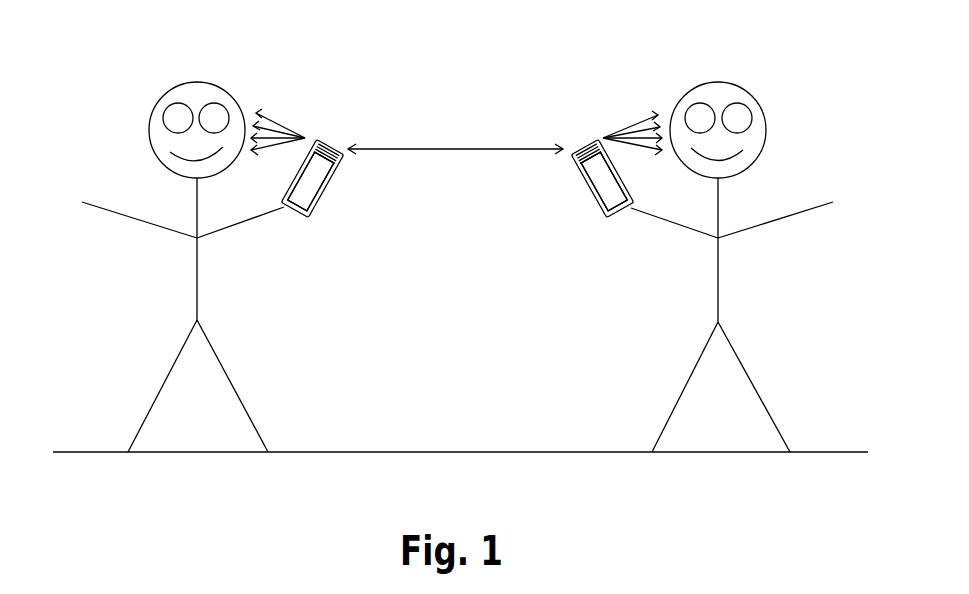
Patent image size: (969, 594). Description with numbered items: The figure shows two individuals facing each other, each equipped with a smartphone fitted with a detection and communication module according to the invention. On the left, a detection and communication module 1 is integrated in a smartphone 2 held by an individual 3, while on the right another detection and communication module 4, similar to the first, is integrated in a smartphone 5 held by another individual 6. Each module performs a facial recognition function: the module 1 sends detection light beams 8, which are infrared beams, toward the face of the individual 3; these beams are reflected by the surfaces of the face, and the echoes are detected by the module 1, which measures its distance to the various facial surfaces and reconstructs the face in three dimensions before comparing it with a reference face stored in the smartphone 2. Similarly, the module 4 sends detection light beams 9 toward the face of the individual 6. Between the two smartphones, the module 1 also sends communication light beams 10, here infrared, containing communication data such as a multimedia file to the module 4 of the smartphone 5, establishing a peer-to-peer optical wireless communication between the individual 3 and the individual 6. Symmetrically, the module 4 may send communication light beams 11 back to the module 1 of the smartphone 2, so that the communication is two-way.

The detection and communication module 1 is at (336, 142).
The smartphone 2 is at (322, 190).
The individual 3 is at (197, 290).
The detection and communication module 4 is at (593, 142).
The smartphone 5 is at (592, 190).
The individual 6 is at (718, 280).
The detection light beams 8 is at (275, 120).
The detection light beams 9 is at (638, 120).
The communication light beams 10 is at (389, 151).
The communication light beams 11 is at (535, 151).